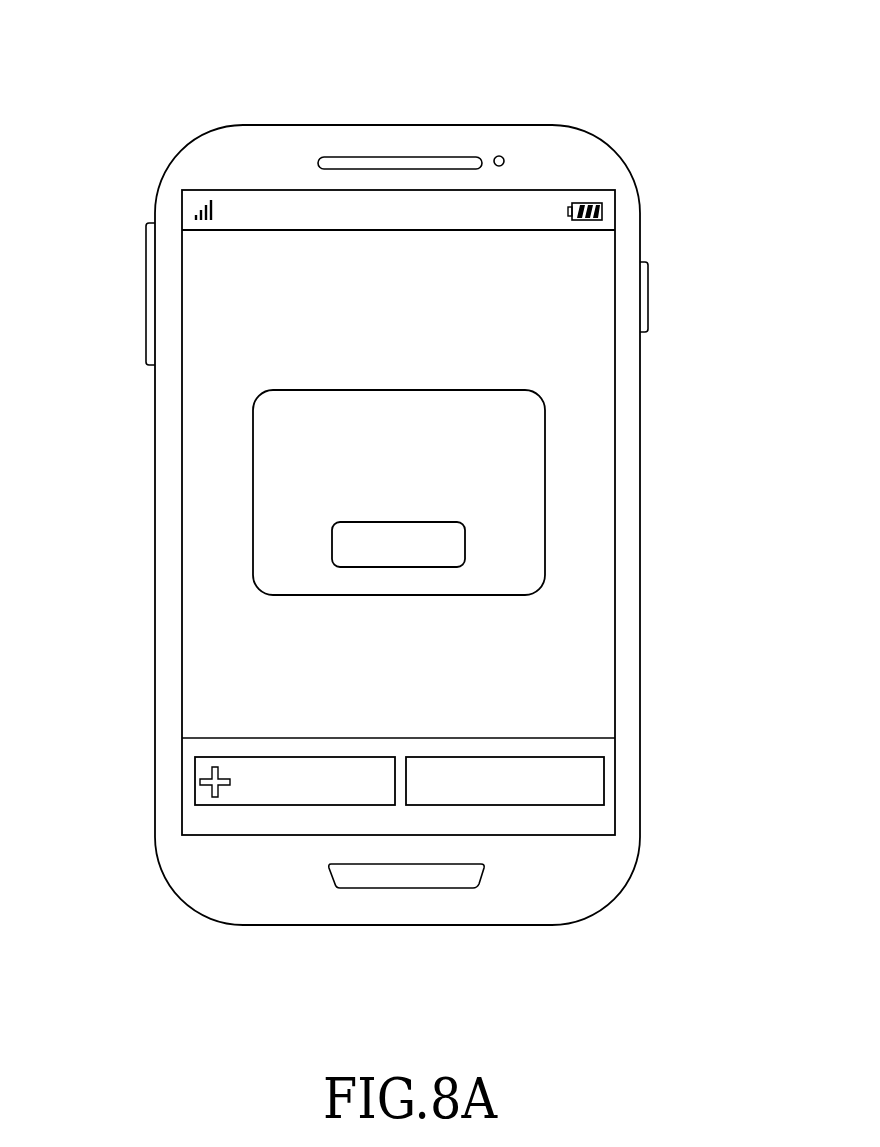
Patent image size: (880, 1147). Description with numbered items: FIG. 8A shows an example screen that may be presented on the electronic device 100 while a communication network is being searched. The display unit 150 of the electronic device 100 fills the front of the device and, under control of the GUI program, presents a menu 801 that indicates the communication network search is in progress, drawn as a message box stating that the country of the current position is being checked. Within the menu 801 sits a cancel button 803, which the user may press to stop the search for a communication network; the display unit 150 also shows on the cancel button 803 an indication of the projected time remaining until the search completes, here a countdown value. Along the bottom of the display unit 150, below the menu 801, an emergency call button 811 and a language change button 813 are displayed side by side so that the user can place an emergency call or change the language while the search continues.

The electronic device 100 is at (672, 48).
The display unit 150 is at (558, 283).
The menu 801 is at (527, 422).
The cancel button 803 is at (457, 538).
The emergency call button 811 is at (202, 765).
The language change button 813 is at (600, 767).